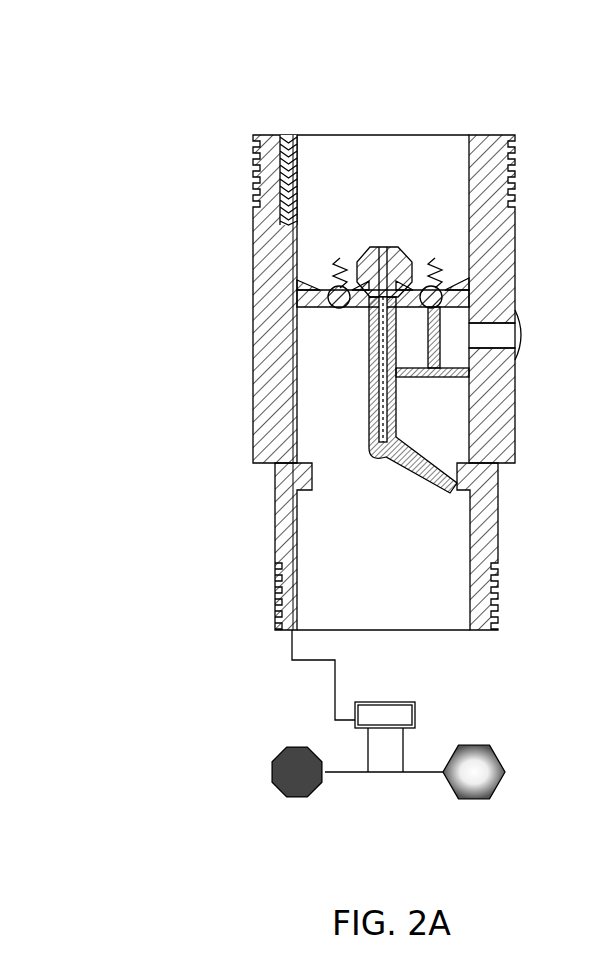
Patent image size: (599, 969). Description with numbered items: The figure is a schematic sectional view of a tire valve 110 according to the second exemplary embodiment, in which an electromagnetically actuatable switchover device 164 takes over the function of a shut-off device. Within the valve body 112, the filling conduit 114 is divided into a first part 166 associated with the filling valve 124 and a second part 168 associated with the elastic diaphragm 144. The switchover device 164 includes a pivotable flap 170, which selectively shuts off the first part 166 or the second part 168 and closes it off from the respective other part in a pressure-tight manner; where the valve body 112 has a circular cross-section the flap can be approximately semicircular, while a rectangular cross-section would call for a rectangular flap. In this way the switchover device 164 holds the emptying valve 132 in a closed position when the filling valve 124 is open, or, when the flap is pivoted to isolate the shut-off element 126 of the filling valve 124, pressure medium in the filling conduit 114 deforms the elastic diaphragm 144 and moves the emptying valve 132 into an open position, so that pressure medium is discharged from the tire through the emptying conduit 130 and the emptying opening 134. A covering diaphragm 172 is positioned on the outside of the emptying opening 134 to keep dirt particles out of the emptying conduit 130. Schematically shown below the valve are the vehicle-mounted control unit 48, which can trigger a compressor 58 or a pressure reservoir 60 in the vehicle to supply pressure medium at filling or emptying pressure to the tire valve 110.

The tire valve 110 is at (205, 101).
The valve body 112 is at (507, 467).
The filling conduit 114 is at (394, 569).
The filling valve 124 is at (328, 289).
The shut-off element 126 is at (340, 312).
The emptying conduit 130 is at (424, 356).
The emptying valve 132 is at (454, 286).
The emptying opening 134 is at (493, 338).
The elastic diaphragm 144 is at (455, 380).
The electromagnetically actuatable switchover device 164 is at (399, 243).
The first part of the filling conduit 166 is at (348, 427).
The second part of the filling conduit 168 is at (439, 427).
The pivotable flap 170 is at (453, 485).
The covering diaphragm 172 is at (520, 345).
The control unit 48 is at (405, 702).
The compressor 58 is at (320, 790).
The pressure reservoir 60 is at (495, 792).